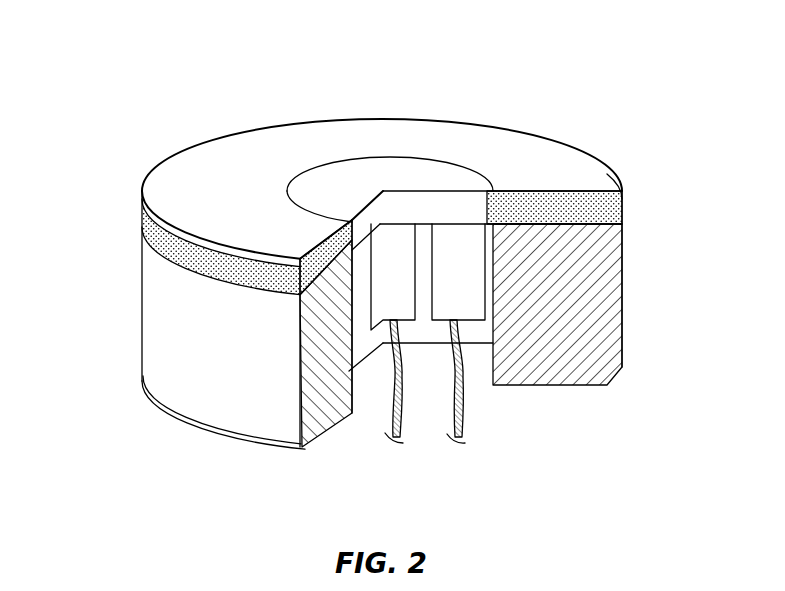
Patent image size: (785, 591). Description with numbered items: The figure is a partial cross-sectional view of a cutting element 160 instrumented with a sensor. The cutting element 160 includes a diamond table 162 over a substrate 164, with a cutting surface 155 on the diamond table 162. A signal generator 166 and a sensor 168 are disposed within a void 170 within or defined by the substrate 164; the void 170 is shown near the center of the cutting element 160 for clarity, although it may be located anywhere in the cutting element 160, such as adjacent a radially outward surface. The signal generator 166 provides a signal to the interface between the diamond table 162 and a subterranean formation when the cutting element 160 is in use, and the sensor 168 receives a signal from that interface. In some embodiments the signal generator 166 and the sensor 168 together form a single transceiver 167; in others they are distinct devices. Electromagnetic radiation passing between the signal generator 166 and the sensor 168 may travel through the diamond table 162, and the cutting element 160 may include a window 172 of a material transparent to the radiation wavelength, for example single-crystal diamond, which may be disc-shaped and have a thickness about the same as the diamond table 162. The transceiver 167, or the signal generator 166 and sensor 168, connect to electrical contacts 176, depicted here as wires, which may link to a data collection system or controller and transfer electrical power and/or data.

The cutting element 160 is at (141, 67).
The cutting surface 155 is at (245, 147).
The window 172 is at (443, 172).
The diamond table 162 is at (603, 210).
The substrate 164 is at (572, 339).
The transceiver 167 is at (368, 374).
The void 170 is at (493, 369).
The sensor 168 is at (408, 287).
The signal generator 166 is at (477, 287).
The electrical contacts 176 is at (402, 417).